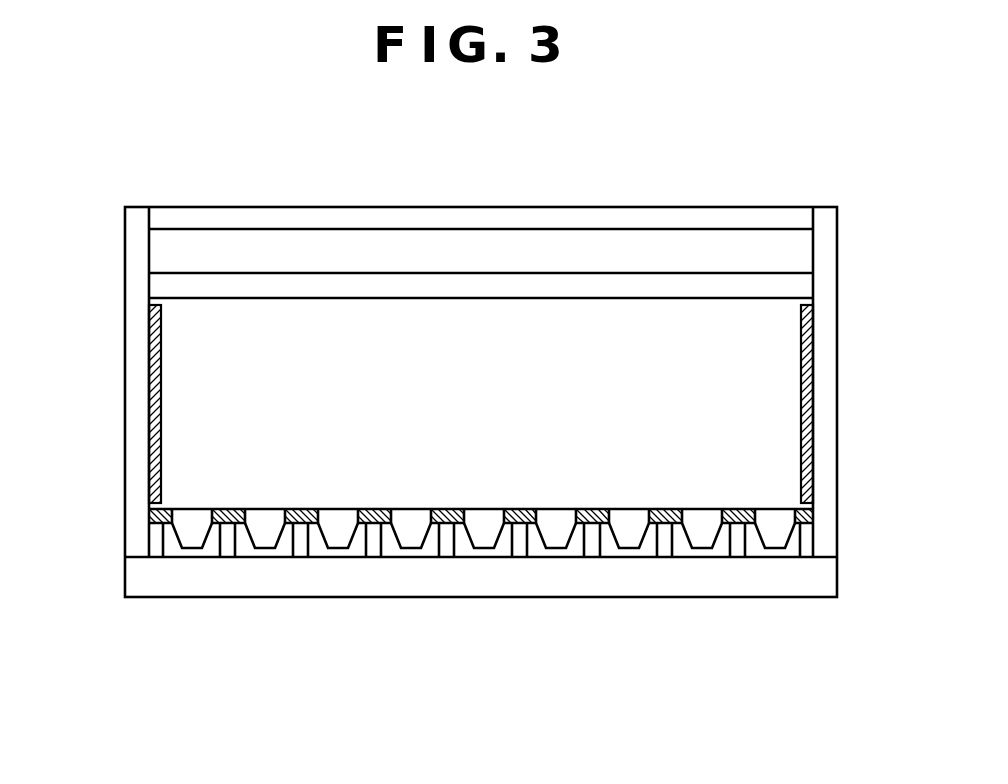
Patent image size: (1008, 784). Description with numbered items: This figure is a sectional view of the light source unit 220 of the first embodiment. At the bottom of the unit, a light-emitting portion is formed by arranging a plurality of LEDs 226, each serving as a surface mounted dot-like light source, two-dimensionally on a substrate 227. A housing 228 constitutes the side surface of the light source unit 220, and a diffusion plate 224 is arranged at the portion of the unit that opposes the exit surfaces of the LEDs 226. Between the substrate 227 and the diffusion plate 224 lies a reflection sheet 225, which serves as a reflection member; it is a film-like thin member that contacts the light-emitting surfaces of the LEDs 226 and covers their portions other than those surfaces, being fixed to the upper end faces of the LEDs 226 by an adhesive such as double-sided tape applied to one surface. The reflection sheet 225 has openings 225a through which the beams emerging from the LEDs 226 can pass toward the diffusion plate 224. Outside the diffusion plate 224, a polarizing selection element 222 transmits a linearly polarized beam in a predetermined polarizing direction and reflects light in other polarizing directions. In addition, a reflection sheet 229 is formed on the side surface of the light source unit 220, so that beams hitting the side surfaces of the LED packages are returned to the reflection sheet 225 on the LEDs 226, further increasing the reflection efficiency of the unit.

The light source unit 220 is at (218, 153).
The polarizing selection element 222 is at (657, 217).
The diffusion plate 224 is at (760, 287).
The reflection sheet 225 is at (150, 521).
The opening 225a is at (192, 515).
The LED 226 is at (358, 548).
The substrate 227 is at (133, 580).
The housing 228 is at (133, 364).
The reflection sheet 229 is at (150, 320).